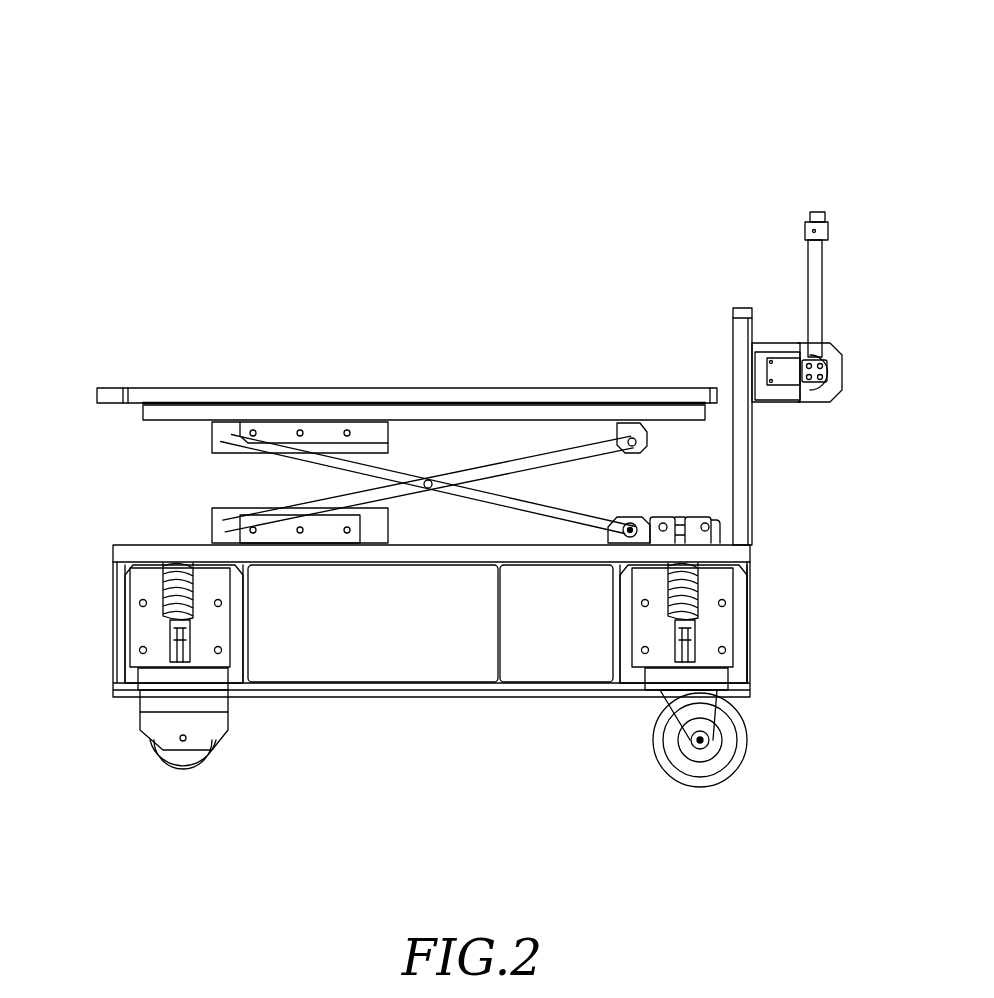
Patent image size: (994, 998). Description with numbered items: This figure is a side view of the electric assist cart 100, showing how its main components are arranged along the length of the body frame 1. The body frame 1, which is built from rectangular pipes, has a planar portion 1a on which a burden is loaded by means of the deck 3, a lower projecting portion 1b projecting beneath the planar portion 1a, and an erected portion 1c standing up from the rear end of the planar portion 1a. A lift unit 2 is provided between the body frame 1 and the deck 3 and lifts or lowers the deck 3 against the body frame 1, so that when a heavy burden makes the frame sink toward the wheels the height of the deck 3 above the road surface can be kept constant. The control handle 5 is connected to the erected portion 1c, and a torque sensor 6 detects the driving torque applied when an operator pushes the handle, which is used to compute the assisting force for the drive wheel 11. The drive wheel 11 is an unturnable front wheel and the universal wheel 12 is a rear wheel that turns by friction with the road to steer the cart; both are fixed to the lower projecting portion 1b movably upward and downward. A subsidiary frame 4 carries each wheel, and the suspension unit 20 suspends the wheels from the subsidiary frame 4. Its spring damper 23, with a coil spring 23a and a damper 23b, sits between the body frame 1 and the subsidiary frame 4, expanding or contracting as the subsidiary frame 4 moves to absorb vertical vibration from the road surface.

The electric assist cart 100 is at (838, 116).
The body frame 1 is at (762, 664).
The planar portion 1a is at (745, 556).
The lower projecting portion 1b is at (745, 640).
The erected portion 1c is at (738, 479).
The lift unit 2 is at (452, 450).
The deck 3 is at (150, 387).
The subsidiary frame 4 is at (207, 657).
The control handle 5 is at (830, 222).
The torque sensor 6 is at (845, 372).
The drive wheel 11 is at (183, 772).
The universal wheel 12 is at (698, 778).
The suspension unit 20 is at (125, 703).
The spring damper 23 is at (165, 642).
The coil spring 23a is at (192, 603).
The damper 23b is at (192, 623).